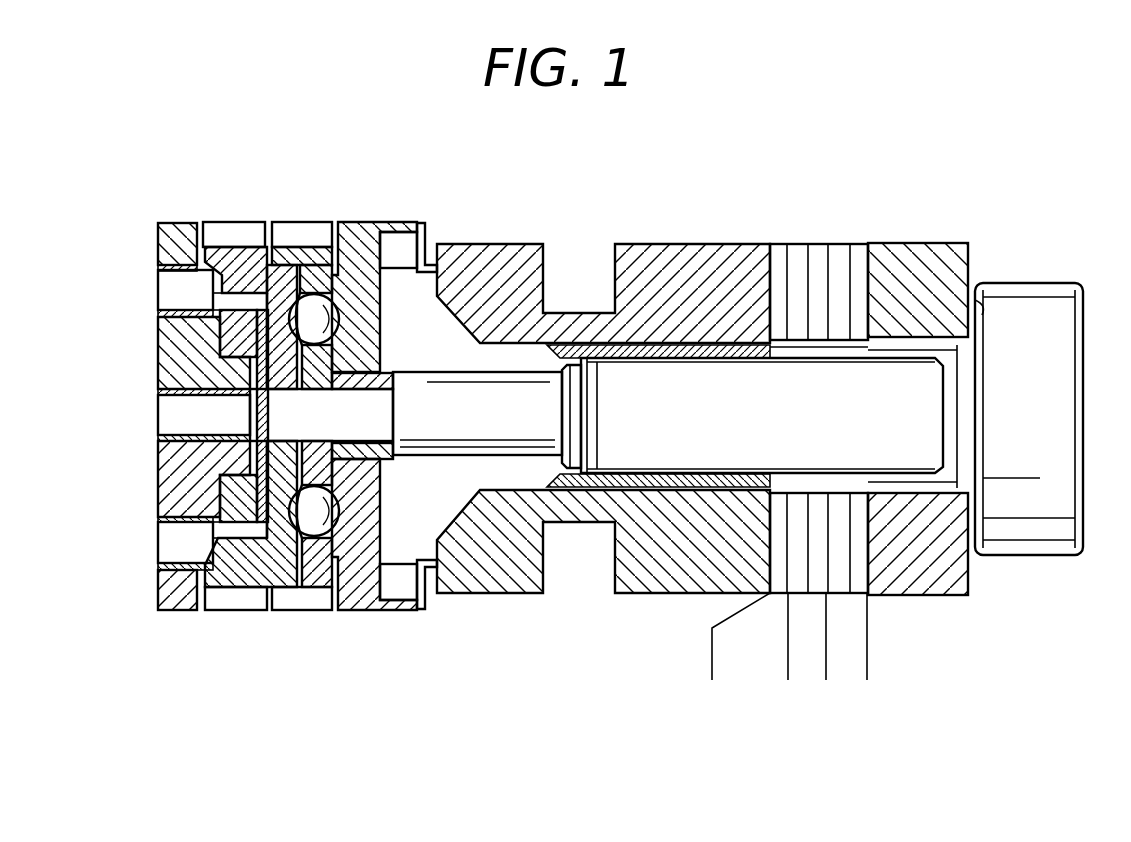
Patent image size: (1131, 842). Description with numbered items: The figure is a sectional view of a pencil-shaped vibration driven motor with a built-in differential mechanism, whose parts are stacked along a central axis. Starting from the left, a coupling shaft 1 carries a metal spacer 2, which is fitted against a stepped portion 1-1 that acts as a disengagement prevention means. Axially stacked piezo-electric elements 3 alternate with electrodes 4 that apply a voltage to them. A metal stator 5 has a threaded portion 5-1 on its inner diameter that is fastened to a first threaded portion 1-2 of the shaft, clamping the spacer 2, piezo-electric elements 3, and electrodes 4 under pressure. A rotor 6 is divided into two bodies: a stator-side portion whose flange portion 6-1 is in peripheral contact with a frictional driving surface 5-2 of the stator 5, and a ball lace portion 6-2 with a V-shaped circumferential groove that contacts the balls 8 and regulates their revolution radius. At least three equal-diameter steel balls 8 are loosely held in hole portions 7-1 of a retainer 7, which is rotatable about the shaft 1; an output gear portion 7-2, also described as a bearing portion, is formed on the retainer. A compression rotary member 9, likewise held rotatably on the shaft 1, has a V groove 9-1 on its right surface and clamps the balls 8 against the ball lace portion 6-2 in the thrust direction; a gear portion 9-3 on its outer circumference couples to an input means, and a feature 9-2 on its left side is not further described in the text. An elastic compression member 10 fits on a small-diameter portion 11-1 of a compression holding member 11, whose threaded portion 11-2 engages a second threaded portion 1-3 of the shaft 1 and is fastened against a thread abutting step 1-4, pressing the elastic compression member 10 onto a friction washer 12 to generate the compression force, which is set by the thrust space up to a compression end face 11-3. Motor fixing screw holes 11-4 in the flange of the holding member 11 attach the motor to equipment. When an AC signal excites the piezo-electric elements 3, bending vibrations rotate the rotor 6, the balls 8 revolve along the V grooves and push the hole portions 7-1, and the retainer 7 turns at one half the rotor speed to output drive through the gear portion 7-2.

The coupling shaft 1 is at (1058, 292).
The stepped portion 1-1 is at (990, 310).
The first threaded portion 1-2 is at (712, 495).
The second threaded portion 1-3 is at (250, 410).
The thread abutting step 1-4 is at (225, 470).
The metal spacer 2 is at (912, 245).
The piezo-electric elements 3 is at (874, 222).
The electrodes 4 is at (867, 690).
The metal stator 5 is at (710, 244).
The threaded portion 5-1 is at (568, 343).
The frictional driving surface 5-2 is at (447, 244).
The rotor 6 is at (415, 232).
The flange portion 6-1 is at (425, 600).
The ball lace portion 6-2 is at (350, 600).
The retainer 7 is at (312, 222).
The hole portions 7-1 is at (313, 580).
The output gear portion 7-2 is at (333, 222).
The balls 8 is at (282, 545).
The compression rotary member 9 is at (250, 222).
The V groove 9-1 is at (287, 240).
The carrier groove 9-2 is at (265, 292).
The gear portion 9-3 is at (215, 222).
The elastic compression member 10 is at (225, 495).
The compression holding member 11 is at (180, 222).
The small-diameter portion 11-1 is at (175, 372).
The threaded portion 11-2 is at (205, 433).
The compression end face 11-3 is at (200, 528).
The motor fixing screw holes 11-4 is at (160, 268).
The friction washer 12 is at (247, 560).